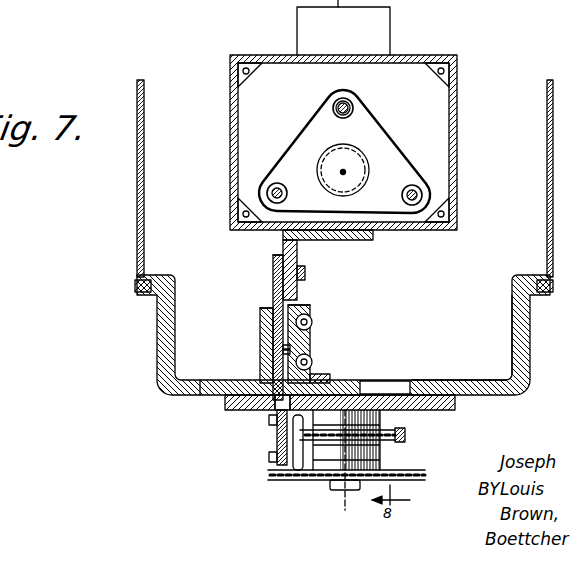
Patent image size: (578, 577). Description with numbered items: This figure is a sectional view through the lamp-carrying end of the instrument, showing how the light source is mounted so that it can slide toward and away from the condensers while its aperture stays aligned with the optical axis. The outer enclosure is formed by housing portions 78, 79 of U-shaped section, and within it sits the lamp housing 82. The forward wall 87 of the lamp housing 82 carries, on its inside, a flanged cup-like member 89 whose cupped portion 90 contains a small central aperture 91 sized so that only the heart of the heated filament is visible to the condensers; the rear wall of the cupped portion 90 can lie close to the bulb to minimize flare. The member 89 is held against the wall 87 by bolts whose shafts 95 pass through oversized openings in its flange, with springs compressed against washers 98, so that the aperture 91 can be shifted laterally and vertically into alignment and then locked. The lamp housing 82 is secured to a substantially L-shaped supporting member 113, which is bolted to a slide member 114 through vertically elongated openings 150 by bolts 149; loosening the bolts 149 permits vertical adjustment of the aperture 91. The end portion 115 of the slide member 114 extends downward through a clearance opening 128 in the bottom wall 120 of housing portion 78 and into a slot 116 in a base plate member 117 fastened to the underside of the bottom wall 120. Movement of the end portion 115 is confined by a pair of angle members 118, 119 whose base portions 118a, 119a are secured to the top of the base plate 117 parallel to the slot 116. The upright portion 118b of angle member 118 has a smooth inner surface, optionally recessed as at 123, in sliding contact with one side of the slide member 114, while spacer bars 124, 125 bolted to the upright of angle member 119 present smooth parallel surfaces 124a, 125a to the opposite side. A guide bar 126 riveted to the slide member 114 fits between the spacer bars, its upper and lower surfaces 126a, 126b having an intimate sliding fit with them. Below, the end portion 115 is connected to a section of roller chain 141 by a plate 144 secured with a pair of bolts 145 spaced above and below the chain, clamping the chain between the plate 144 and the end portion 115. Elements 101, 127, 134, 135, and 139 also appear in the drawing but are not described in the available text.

The housing portion 78 is at (157, 333).
The housing portion 79 is at (137, 214).
The lamp housing 82 is at (459, 112).
The forward wall 87 is at (405, 95).
The flanged cup-like member 89 is at (412, 152).
The cupped portion 90 is at (325, 155).
The aperture 91 is at (345, 173).
The shaft 95 is at (334, 99).
The washer 98 is at (333, 110).
The motor block 101 is at (390, 15).
The supporting member 113 is at (363, 241).
The slide member 114 is at (272, 291).
The end portion 115 is at (270, 452).
The slot 116 is at (277, 432).
The base plate member 117 is at (458, 405).
The angle member 118 is at (262, 333).
The base portion 118a is at (228, 398).
The upright portion 118b is at (258, 327).
The angle member 119 is at (380, 380).
The base portion 119a is at (360, 391).
The bottom wall 120 is at (530, 363).
The recess 123 is at (283, 352).
The spacer bar 124 is at (300, 311).
The smooth parallel surface 124a is at (297, 300).
The spacer bar 125 is at (322, 378).
The smooth parallel surface 125a is at (272, 405).
The guide bar 126 is at (375, 316).
The upper parallel surface 126a is at (306, 340).
The lower parallel surface 126b is at (312, 352).
The spacer 127 is at (283, 347).
The clearance opening 128 is at (425, 382).
The lower chain 134 is at (425, 480).
The axis line 135 is at (346, 500).
The sprocket 139 is at (390, 460).
The roller chain 141 is at (405, 432).
The plate 144 is at (305, 485).
The bolt 145 is at (270, 462).
The bolt 149 is at (308, 268).
The opening 150 is at (272, 256).